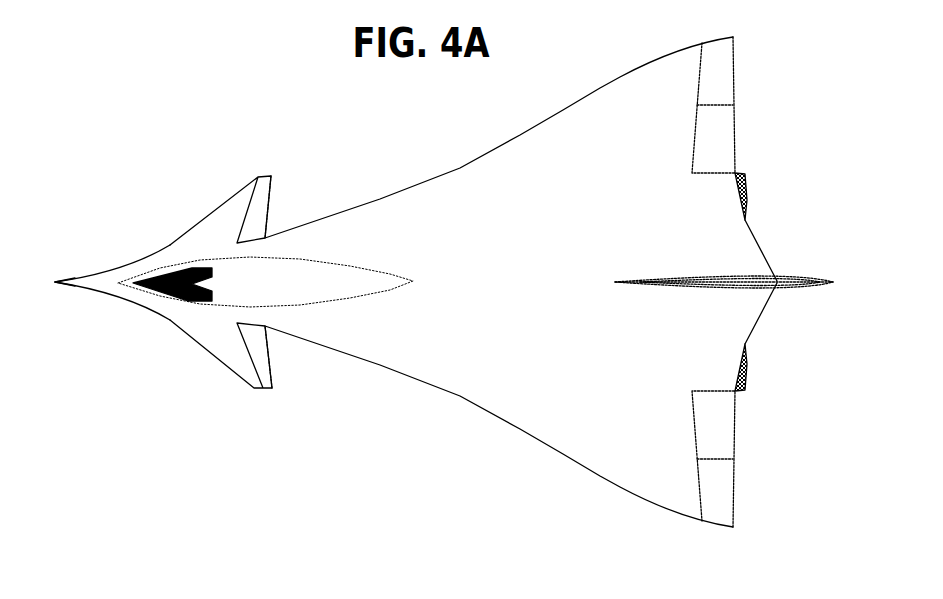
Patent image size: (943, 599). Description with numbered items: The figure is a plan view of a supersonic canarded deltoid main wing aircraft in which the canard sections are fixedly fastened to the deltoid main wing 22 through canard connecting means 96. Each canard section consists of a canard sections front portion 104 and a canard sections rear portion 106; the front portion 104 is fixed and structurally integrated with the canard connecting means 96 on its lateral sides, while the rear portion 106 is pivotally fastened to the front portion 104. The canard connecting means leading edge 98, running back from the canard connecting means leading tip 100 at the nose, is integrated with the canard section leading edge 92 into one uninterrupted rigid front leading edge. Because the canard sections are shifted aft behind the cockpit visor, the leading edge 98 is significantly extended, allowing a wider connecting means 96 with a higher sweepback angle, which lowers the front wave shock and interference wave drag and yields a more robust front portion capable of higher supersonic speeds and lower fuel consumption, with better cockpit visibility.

The deltoid main wing 22 is at (373, 353).
The canard section leading edge 92 is at (209, 216).
The canard connecting means 96 is at (142, 300).
The canard connecting means leading edge 98 is at (107, 270).
The canard connecting means leading tip 100 is at (55, 282).
The canard sections front portion 104 is at (225, 342).
The canard sections rear portion 106 is at (268, 359).